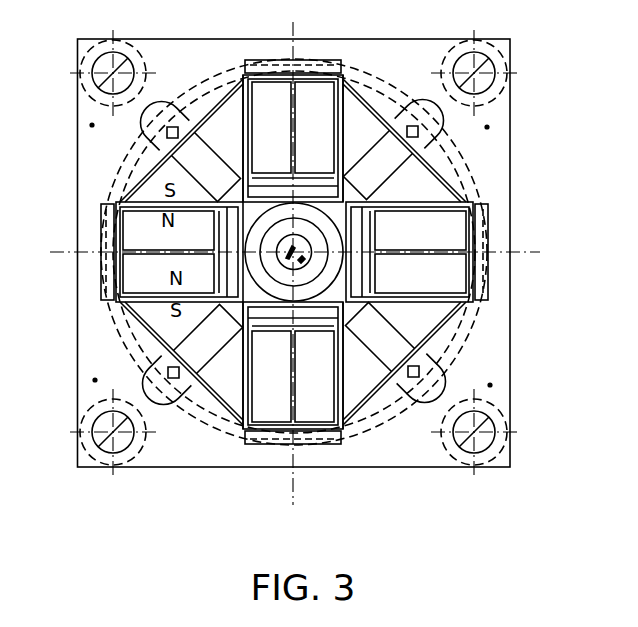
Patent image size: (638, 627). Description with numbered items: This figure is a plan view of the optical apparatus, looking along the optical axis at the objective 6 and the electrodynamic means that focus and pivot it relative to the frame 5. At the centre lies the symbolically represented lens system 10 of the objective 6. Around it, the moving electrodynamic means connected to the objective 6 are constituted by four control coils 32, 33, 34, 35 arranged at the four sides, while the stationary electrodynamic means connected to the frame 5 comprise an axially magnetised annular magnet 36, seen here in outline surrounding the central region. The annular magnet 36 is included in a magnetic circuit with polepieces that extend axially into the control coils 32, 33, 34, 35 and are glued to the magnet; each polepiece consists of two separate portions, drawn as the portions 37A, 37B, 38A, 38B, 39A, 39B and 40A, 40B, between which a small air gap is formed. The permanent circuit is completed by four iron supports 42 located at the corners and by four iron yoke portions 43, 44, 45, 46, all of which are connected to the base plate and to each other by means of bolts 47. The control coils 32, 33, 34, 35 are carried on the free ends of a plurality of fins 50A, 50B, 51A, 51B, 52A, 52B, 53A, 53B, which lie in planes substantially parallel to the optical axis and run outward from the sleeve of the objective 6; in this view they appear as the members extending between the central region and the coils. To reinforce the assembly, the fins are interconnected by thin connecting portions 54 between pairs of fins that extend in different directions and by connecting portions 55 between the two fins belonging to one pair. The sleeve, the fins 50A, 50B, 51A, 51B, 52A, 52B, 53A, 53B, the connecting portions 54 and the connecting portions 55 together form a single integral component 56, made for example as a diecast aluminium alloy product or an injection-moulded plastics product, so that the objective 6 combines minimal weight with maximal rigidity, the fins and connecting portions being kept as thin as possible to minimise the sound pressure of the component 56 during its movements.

The frame 5 is at (510, 142).
The objective 6 is at (345, 200).
The lens system 10 is at (310, 267).
The control coil 32 is at (100, 240).
The control coil 33 is at (316, 66).
The control coil 34 is at (481, 241).
The control coil 35 is at (278, 437).
The annular magnet 36 is at (452, 360).
The polepiece portion 37A is at (104, 279).
The polepiece portion 37B is at (104, 222).
The polepiece portion 38A is at (267, 96).
The polepiece portion 38B is at (322, 96).
The polepiece portion 39A is at (452, 222).
The polepiece portion 39B is at (450, 281).
The polepiece portion 40A is at (318, 408).
The polepiece portion 40B is at (262, 412).
The iron support 42 is at (97, 40).
The iron yoke portion 43 is at (95, 380).
The iron yoke portion 44 is at (92, 125).
The iron yoke portion 45 is at (487, 127).
The iron yoke portion 46 is at (490, 385).
The bolt 47 is at (91, 67).
The fin 50A is at (132, 349).
The fin 50B is at (118, 204).
The fin 51A is at (243, 146).
The fin 51B is at (343, 146).
The fin 52A is at (432, 192).
The fin 52B is at (427, 293).
The fin 53A is at (246, 366).
The fin 53B is at (341, 364).
The connecting portion 54 is at (190, 95).
The connecting portion 55 is at (283, 78).
The integral component 56 is at (128, 358).